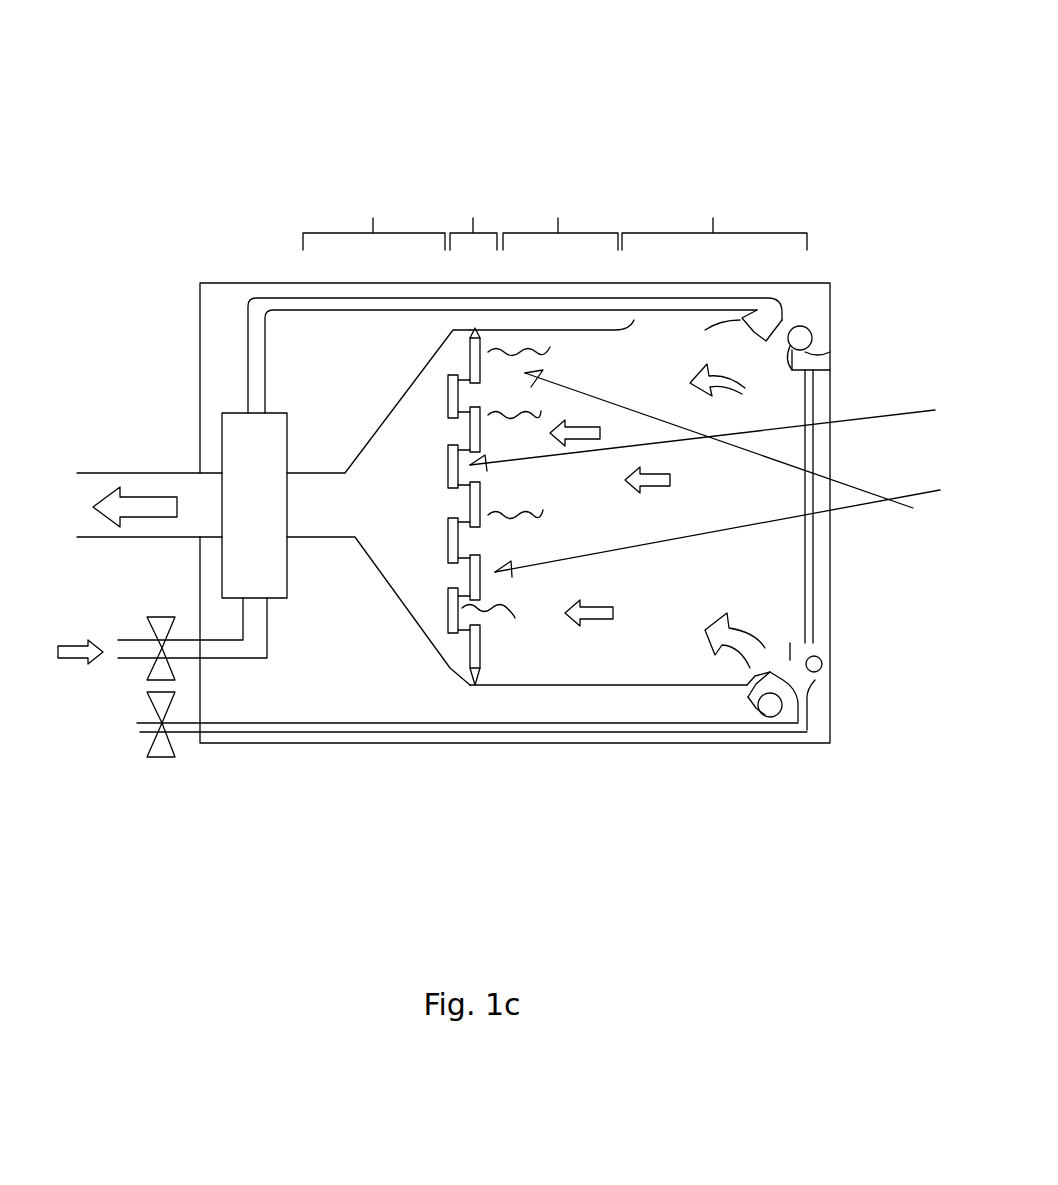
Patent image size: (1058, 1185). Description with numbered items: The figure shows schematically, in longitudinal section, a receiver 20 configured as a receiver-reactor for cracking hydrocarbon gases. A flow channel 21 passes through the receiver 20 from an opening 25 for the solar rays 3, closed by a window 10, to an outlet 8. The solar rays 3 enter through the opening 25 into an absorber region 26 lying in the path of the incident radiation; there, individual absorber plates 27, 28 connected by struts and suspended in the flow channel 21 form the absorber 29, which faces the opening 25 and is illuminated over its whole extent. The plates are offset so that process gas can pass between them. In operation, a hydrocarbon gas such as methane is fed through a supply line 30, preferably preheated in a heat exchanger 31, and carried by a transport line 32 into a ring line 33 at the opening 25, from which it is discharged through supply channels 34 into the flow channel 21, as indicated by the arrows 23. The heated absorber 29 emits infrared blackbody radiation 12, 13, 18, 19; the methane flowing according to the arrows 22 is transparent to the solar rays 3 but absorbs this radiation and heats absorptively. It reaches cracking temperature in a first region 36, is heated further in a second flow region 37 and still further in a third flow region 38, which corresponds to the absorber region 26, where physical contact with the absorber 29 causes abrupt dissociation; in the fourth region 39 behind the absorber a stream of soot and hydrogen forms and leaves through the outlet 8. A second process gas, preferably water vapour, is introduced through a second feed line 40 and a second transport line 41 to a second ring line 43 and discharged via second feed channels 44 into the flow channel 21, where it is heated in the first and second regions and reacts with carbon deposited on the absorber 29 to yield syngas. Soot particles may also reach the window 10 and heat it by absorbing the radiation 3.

The solar rays 3 is at (857, 488).
The outlet 8 is at (115, 470).
The window 10 is at (815, 615).
The infrared radiation 12 is at (505, 505).
The air channel 13 is at (634, 322).
The lower air inlet 18 is at (752, 703).
The upper air inlet 19 is at (730, 322).
The receiver 20 is at (620, 128).
The flow channel 21 is at (420, 500).
The arrows for process gas 22 is at (650, 490).
The arrows for discharged process gas 23 is at (745, 388).
The opening 25 is at (825, 370).
The absorber region 26 is at (473, 212).
The absorber plates 27 is at (447, 470).
The nozzle 28 is at (463, 440).
The absorber 29 is at (412, 547).
The supply line 30 is at (140, 632).
The heat exchanger 31 is at (254, 505).
The transport line 32 is at (242, 358).
The ring line 33 is at (778, 318).
The supply channels 34 is at (750, 686).
The first region 36 is at (714, 212).
The second flow region 37 is at (560, 212).
The third flow region 38 is at (473, 212).
The fourth region 39 is at (374, 212).
The second feed line 40 is at (145, 737).
The second transport line 41 is at (433, 735).
The second ring line 43 is at (805, 330).
The second feed channels 44 is at (815, 340).